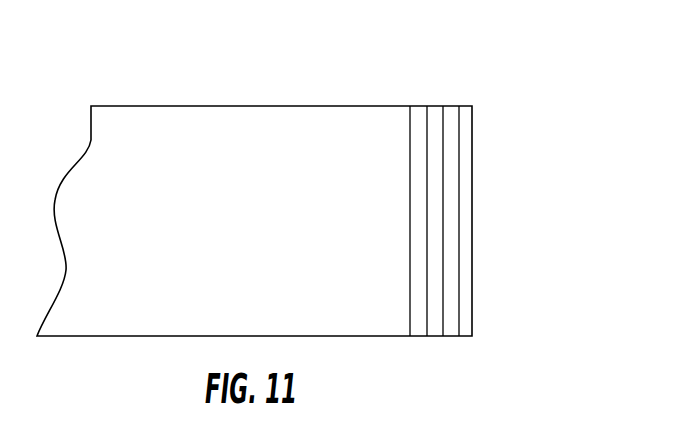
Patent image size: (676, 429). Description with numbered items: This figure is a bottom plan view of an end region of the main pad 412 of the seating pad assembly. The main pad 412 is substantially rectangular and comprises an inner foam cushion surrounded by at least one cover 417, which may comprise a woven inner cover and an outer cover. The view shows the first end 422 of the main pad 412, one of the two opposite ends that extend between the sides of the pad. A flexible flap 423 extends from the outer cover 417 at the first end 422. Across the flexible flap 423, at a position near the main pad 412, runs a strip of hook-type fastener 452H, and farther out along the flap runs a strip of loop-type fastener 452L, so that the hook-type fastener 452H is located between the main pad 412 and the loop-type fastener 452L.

The main pad 412 is at (234, 68).
The cover 417 is at (125, 123).
The first end 422 is at (398, 337).
The flexible flap 423 is at (420, 67).
The hook-type fastener 452H is at (418, 230).
The loop-type fastener 452L is at (453, 316).